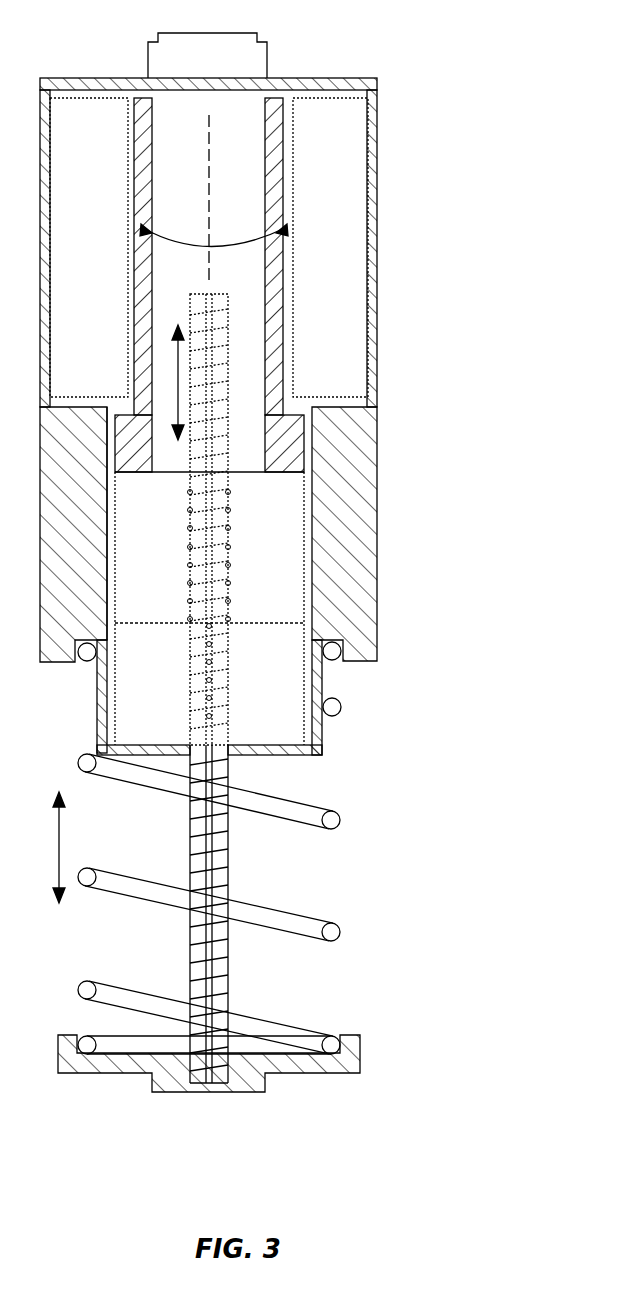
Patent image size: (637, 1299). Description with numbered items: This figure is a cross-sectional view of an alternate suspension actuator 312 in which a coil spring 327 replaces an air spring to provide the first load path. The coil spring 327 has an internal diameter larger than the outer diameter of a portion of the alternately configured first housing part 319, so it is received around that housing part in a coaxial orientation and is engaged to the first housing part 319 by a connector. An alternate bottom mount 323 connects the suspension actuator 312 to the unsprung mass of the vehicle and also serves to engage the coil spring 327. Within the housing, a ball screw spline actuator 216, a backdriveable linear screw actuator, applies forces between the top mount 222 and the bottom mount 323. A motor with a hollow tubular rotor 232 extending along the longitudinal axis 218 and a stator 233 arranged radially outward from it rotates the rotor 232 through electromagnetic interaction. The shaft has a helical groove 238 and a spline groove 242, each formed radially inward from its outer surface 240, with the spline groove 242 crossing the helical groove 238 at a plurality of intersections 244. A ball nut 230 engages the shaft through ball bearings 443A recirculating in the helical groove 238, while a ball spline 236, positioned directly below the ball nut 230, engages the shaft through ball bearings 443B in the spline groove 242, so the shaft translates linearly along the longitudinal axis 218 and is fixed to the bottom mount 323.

The suspension actuator 312 is at (410, 68).
The first housing part 319 is at (377, 135).
The top mount 222 is at (268, 50).
The stator 233 is at (355, 183).
The rotor 232 is at (285, 212).
The longitudinal axis 218 is at (209, 205).
The ball screw spline actuator 216 is at (298, 492).
The ball nut 230 is at (209, 560).
The ball spline 236 is at (151, 651).
The helical groove 238 is at (228, 850).
The ball bearings 443A is at (228, 565).
The ball bearings 443B is at (210, 698).
The outer surface 240 is at (200, 935).
The coil spring 327 is at (345, 820).
The intersections 244 is at (205, 843).
The spline groove 242 is at (200, 855).
The bottom mount 323 is at (362, 1062).